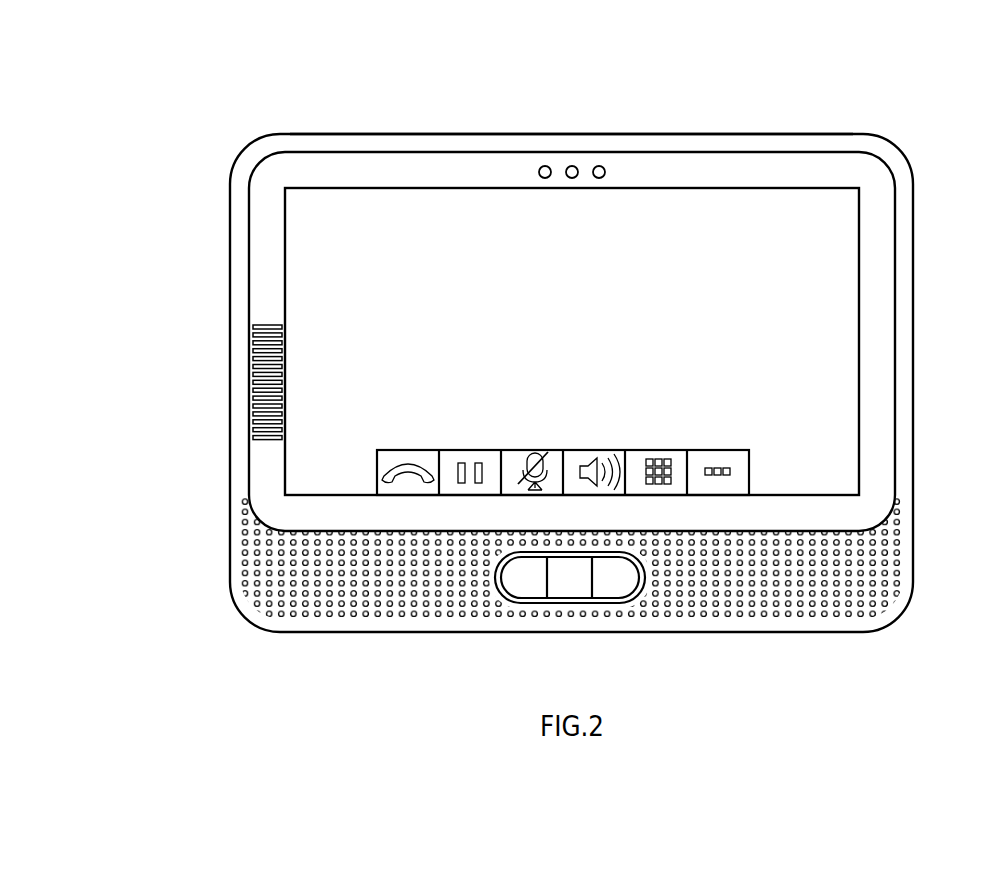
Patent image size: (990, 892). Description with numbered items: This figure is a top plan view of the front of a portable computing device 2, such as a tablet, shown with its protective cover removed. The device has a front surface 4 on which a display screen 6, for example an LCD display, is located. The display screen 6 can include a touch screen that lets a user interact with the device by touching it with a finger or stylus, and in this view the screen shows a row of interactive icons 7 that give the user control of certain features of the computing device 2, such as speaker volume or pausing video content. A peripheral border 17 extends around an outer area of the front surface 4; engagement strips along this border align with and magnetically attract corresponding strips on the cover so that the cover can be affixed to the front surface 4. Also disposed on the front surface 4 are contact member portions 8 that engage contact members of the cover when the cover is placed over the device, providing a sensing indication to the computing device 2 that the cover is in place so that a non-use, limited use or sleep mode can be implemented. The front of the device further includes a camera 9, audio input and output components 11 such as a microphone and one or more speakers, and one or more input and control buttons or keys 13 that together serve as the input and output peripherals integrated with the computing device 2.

The computing device 2 is at (882, 133).
The peripheral border 17 is at (710, 133).
The front surface 4 is at (878, 362).
The display screen 6 is at (840, 270).
The camera 9 is at (572, 165).
The contact member portions 8 is at (253, 372).
The interactive icons 7 is at (655, 449).
The audio input and output components 11 is at (783, 607).
The input/control buttons or keys 13 is at (526, 580).